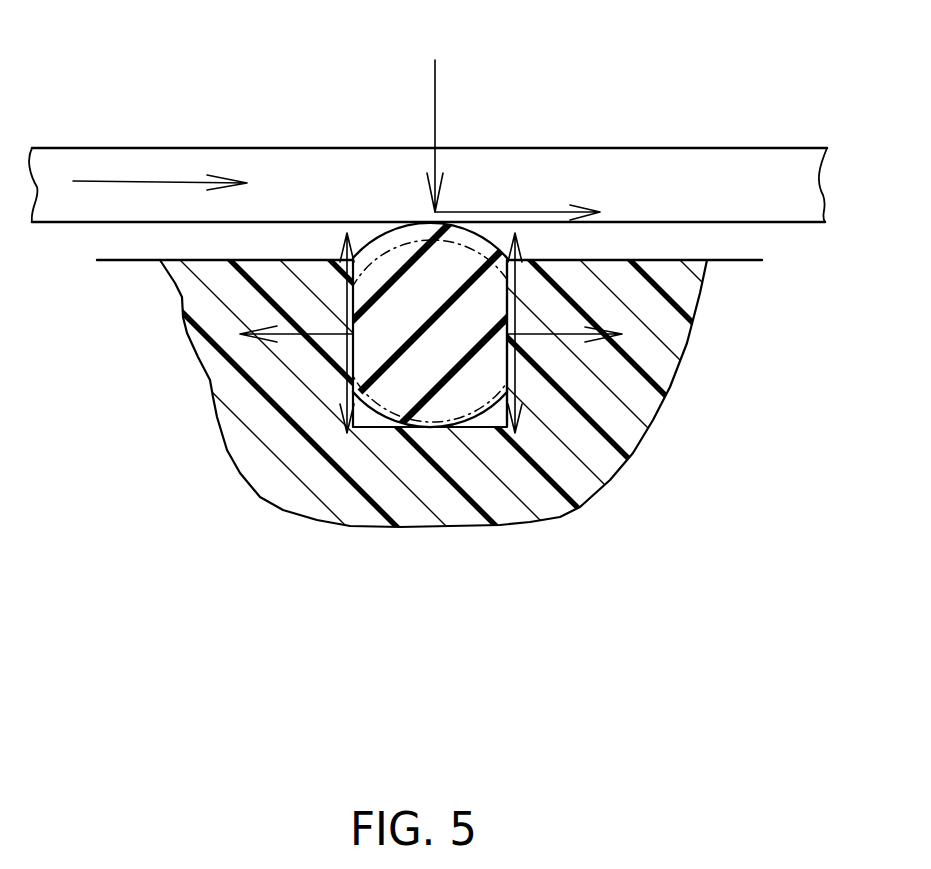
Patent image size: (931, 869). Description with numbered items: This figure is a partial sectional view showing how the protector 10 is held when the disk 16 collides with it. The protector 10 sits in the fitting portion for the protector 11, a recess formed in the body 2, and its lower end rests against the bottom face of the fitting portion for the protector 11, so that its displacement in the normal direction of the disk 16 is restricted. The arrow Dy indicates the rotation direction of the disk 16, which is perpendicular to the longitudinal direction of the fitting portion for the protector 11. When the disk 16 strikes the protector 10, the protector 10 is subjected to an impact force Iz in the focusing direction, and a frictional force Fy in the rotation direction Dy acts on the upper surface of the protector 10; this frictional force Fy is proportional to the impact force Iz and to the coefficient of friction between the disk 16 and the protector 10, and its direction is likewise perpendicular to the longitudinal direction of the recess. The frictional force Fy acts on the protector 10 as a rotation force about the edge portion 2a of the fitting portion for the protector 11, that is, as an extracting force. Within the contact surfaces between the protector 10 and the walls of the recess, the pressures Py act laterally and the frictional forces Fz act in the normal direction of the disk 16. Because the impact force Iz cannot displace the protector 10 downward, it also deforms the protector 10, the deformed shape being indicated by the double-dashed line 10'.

The substrate 2 is at (668, 332).
The edge portion 2a is at (522, 278).
The protector 10 is at (405, 228).
The double-dashed line 10' is at (346, 226).
The fitting portion for the protector 11 is at (390, 427).
The disk 16 is at (670, 172).
The rotation direction of the disk Dy is at (163, 182).
The impact force Iz is at (435, 103).
The frictional force Fy is at (495, 212).
The pressures Py is at (303, 330).
The frictional forces Fz is at (347, 380).